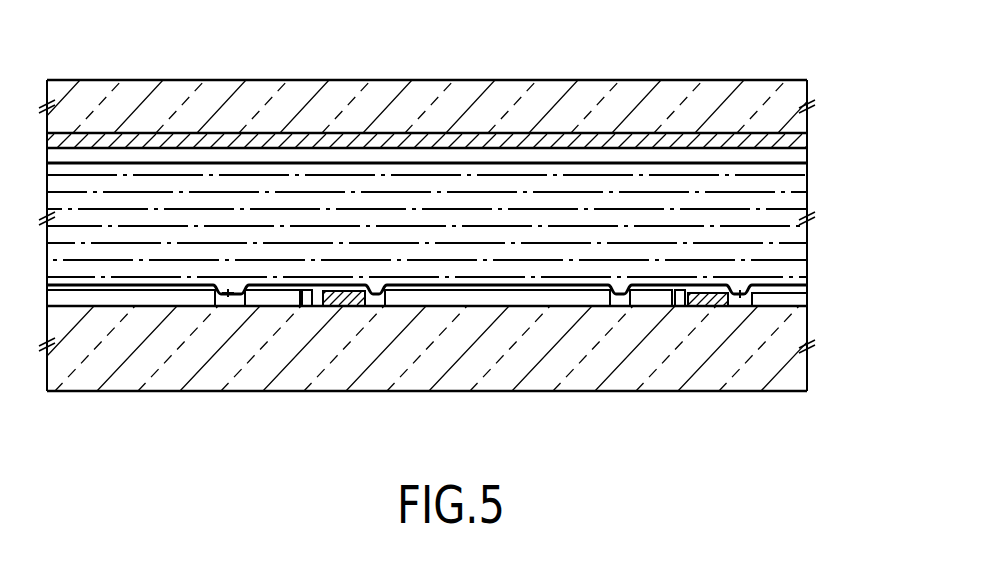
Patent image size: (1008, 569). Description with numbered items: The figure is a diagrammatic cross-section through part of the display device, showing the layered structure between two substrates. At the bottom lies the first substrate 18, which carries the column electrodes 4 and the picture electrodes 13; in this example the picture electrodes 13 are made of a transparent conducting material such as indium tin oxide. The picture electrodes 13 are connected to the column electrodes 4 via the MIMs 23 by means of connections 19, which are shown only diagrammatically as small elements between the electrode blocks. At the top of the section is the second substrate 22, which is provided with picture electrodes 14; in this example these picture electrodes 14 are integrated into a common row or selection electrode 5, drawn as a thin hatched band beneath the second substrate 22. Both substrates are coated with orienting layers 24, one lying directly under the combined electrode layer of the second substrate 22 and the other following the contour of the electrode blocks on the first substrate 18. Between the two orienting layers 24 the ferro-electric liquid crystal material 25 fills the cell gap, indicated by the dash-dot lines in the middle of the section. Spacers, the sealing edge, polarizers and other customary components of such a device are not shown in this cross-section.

The second substrate 22 is at (462, 100).
The picture electrodes 14 is at (427, 92).
The common row or selection electrode 5 is at (553, 143).
The orienting layers 24 is at (800, 162).
The ferro-electric liquid crystal material 25 is at (790, 243).
The picture electrodes 13 is at (123, 297).
The MIMs 23 is at (277, 297).
The connections 19 is at (228, 297).
The column electrodes 4 is at (348, 303).
The first substrate 18 is at (410, 375).